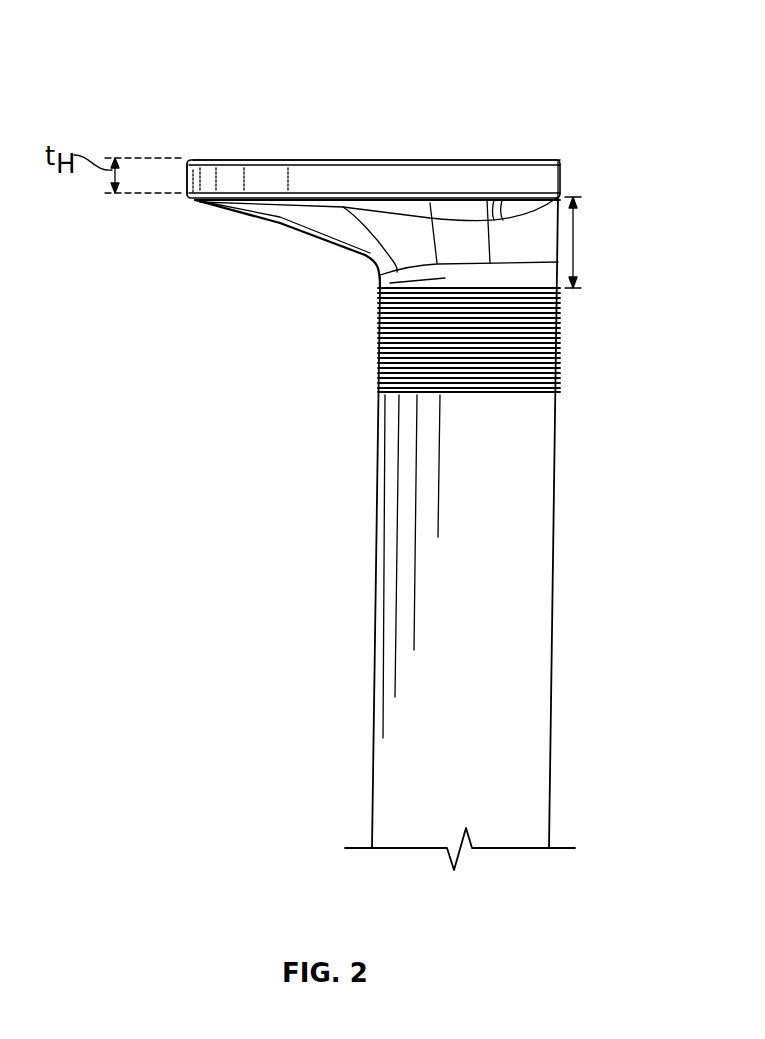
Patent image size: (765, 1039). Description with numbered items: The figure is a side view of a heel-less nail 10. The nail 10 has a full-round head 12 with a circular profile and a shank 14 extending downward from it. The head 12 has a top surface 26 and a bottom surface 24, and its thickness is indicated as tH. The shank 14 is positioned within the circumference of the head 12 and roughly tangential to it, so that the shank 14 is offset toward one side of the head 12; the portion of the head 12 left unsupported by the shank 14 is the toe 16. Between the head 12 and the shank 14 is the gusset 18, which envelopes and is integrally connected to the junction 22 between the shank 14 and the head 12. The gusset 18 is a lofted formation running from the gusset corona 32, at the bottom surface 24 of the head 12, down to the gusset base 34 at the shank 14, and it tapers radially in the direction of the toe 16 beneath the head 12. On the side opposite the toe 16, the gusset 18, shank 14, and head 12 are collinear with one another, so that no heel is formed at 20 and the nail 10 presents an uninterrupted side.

The heel-less nail 10 is at (176, 54).
The head 12 is at (452, 160).
The shank 14 is at (540, 514).
The toe 16 is at (186, 197).
The gusset 18 is at (345, 233).
The heel location 20 is at (562, 178).
The junction 22 is at (575, 237).
The bottom surface 24 is at (197, 201).
The top surface 26 is at (305, 160).
The gusset corona 32 is at (477, 198).
The gusset base 34 is at (380, 280).